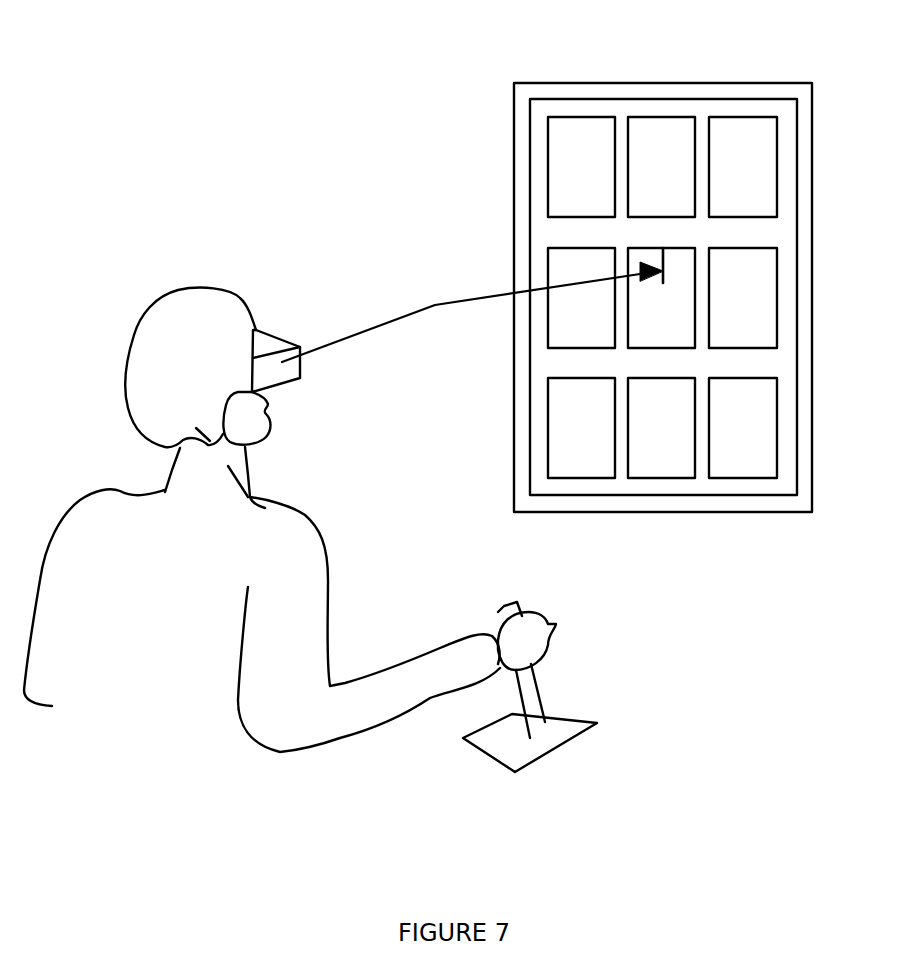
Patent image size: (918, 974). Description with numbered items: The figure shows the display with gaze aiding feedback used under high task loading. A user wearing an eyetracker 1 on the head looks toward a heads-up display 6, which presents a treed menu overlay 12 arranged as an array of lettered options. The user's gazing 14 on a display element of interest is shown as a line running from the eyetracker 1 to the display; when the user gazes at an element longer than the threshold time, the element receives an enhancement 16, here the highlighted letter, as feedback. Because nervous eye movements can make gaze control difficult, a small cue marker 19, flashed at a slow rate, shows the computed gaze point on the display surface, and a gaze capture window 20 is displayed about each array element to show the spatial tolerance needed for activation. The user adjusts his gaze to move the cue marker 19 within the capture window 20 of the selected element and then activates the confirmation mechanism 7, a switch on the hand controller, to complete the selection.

The eyetracker 1 is at (282, 330).
The heads-up display 6 is at (748, 82).
The confirmation mechanism 7 is at (495, 622).
The treed menu overlay 12 is at (797, 164).
The gazing 14 is at (435, 308).
The enhancement 16 is at (677, 303).
The cue marker 19 is at (666, 265).
The gaze capture window 20 is at (697, 271).